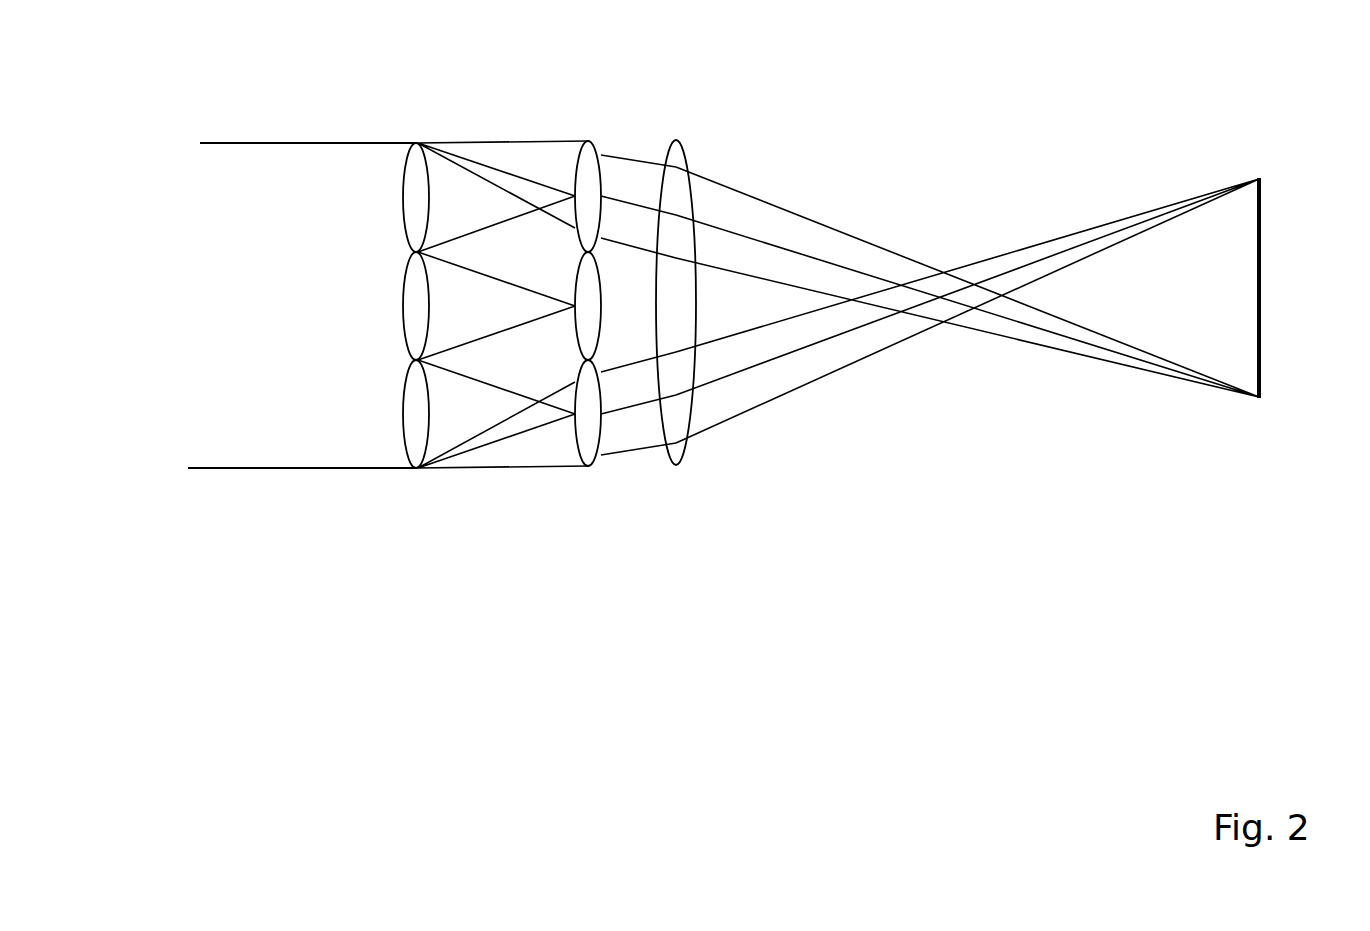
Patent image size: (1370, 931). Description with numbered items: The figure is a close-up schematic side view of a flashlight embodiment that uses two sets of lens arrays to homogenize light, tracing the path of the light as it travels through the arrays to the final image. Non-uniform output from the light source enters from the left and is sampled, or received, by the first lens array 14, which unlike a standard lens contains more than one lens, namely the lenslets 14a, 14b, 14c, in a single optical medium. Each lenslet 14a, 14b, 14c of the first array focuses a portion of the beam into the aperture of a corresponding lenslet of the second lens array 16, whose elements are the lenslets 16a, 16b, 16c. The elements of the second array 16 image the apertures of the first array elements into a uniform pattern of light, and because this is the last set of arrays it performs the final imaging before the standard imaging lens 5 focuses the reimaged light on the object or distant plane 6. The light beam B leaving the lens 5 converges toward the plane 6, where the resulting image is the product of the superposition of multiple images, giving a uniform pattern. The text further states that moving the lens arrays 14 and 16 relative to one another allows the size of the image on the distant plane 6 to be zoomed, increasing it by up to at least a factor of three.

The first lens array 14 is at (415, 99).
The lenslet of first lens array 14a is at (413, 187).
The lenslet of first lens array 14b is at (417, 303).
The lenslet of first lens array 14c is at (417, 411).
The second lens array 16 is at (590, 85).
The lenslet of second lens array 16a is at (587, 227).
The lenslet of second lens array 16b is at (590, 333).
The lenslet of second lens array 16c is at (590, 453).
The standard lens 5 is at (676, 182).
The light beam B is at (949, 111).
The distant plane 6 is at (1262, 358).